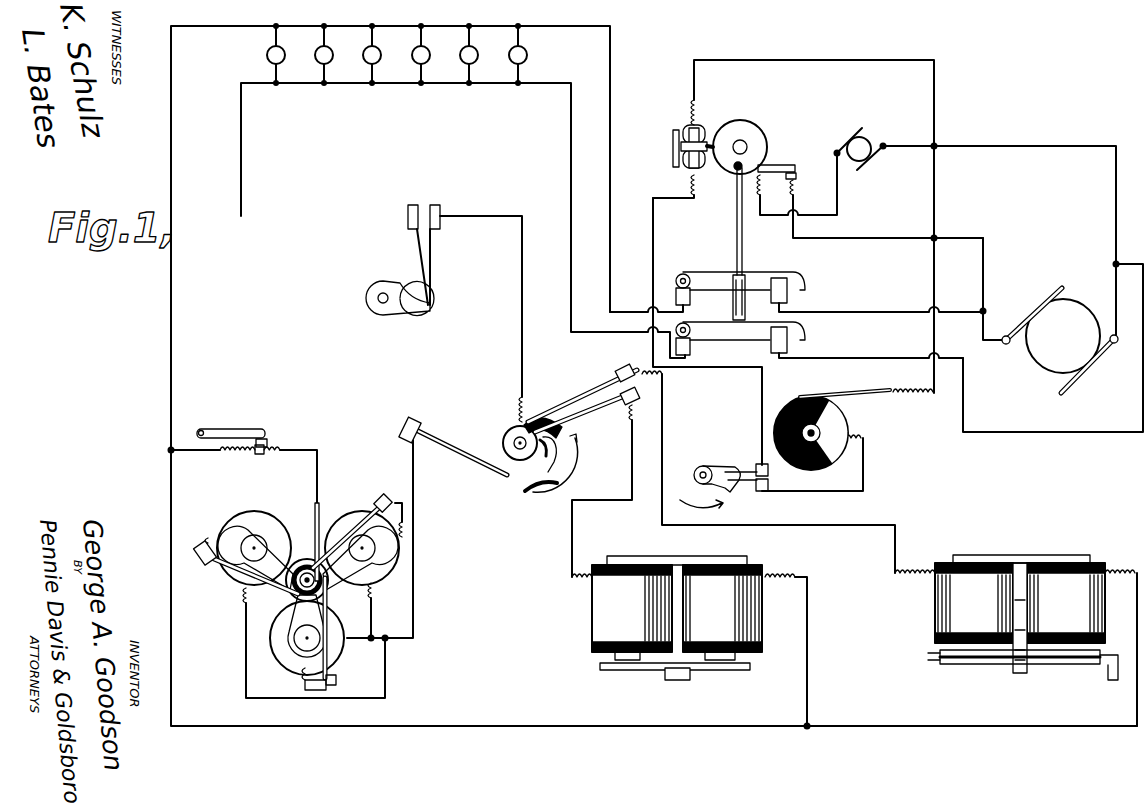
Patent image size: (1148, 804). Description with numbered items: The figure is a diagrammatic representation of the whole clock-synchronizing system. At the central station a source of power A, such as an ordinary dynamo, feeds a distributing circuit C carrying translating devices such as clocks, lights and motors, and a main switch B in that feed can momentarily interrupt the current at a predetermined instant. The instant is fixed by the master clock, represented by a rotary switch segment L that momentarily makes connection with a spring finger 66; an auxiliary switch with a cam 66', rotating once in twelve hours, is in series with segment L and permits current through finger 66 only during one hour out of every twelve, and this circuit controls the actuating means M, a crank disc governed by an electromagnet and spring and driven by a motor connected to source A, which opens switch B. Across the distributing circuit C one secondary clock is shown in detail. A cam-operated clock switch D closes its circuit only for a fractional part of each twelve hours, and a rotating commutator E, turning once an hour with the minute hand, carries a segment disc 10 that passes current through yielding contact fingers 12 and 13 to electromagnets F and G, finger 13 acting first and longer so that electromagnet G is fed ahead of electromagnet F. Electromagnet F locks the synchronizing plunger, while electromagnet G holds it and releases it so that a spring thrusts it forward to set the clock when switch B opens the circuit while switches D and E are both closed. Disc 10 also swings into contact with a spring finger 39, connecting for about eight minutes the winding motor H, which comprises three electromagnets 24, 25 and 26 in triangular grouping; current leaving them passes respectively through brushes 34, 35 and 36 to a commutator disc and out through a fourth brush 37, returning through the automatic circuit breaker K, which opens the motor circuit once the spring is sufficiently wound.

The commutator segment 10 is at (537, 458).
The yielding contact finger 12 is at (605, 408).
The yielding contact finger 13 is at (589, 385).
The electromagnet 24 is at (388, 566).
The electromagnet 25 is at (297, 666).
The electromagnet 26 is at (240, 516).
The brush 34 is at (350, 533).
The brush 35 is at (326, 618).
The brush 36 is at (243, 572).
The fourth brush 37 is at (315, 519).
The spring finger 39 is at (476, 466).
The spring finger 66 is at (845, 383).
The cam 66' is at (716, 471).
The source of power A is at (1060, 340).
The main switch B is at (740, 313).
The distributing circuit C is at (375, 54).
The clock switch D is at (403, 260).
The rotating commutator E is at (521, 447).
The electromagnet F is at (677, 603).
The electromagnet G is at (1023, 599).
The motor H is at (304, 539).
The automatic circuit breaker K is at (232, 421).
The rotary switch L is at (824, 433).
The actuating means M is at (734, 204).